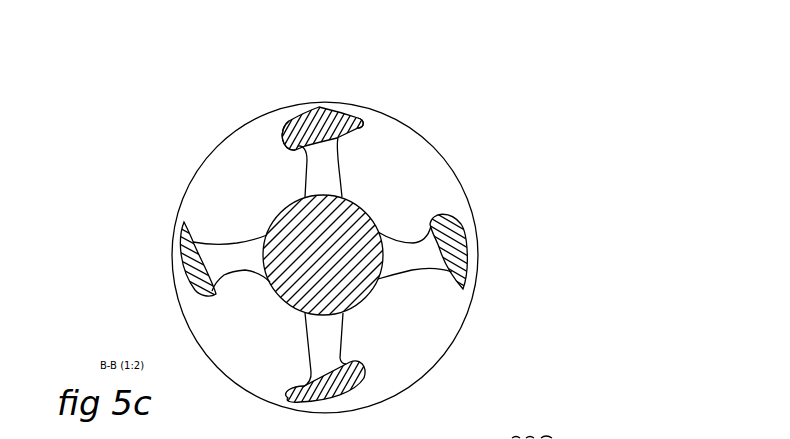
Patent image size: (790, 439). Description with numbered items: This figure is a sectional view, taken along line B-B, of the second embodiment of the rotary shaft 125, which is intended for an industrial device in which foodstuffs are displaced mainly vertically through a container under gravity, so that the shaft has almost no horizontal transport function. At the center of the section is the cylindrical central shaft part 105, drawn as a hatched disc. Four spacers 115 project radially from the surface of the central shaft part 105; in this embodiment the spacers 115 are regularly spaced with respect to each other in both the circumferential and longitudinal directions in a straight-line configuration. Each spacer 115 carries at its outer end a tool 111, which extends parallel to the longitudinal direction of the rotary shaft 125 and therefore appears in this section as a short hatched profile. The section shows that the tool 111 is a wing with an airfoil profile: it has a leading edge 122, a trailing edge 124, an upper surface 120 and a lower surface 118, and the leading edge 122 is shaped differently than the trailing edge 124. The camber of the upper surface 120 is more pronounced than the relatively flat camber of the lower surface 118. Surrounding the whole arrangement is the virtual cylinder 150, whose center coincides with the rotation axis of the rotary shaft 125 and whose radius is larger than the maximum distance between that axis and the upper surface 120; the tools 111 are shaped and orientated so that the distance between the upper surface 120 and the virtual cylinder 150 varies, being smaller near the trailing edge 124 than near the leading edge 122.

The cylindrical central shaft part 105 is at (348, 311).
The tool 111 is at (463, 248).
The spacer 115 is at (408, 258).
The lower surface 118 is at (339, 136).
The upper surface 120 is at (326, 104).
The leading edge 122 is at (285, 142).
The trailing edge 124 is at (360, 118).
The rotary shaft 125 is at (518, 93).
The virtual cylinder 150 is at (468, 198).